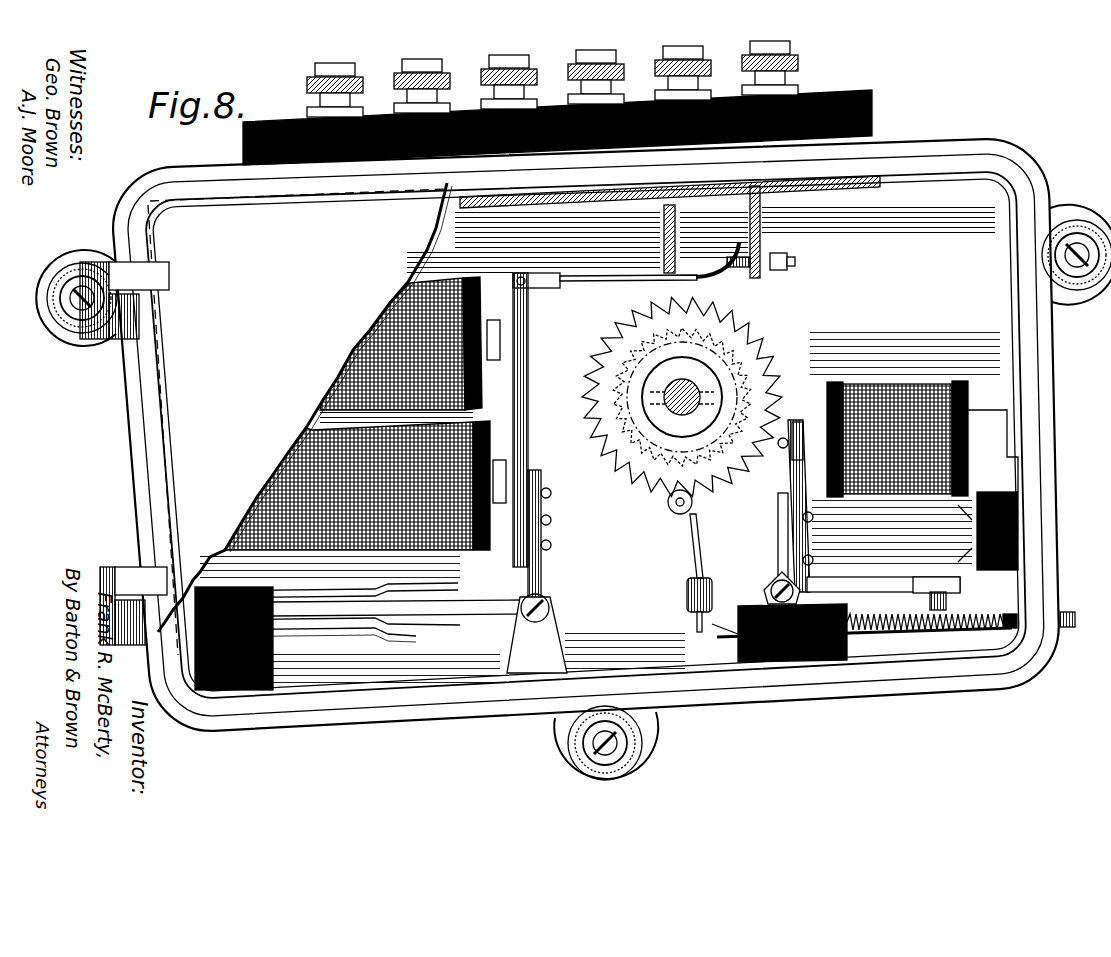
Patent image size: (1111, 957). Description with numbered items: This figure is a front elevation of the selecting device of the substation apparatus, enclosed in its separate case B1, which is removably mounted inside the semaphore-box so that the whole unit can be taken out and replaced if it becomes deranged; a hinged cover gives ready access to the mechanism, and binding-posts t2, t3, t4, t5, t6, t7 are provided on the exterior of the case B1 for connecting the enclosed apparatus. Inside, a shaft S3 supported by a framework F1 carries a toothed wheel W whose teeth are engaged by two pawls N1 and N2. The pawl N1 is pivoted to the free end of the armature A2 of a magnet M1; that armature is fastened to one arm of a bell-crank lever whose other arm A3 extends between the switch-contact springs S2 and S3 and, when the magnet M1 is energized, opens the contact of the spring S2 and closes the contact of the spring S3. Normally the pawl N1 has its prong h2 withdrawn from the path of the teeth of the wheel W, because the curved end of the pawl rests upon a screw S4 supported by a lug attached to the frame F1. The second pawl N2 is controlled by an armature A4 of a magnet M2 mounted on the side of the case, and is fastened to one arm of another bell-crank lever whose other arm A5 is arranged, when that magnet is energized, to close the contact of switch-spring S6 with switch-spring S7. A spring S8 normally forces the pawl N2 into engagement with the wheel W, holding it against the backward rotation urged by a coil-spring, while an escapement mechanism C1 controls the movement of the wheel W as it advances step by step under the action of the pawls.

The binding-post t2 is at (797, 50).
The binding-post t3 is at (706, 51).
The binding-post t4 is at (620, 55).
The binding-post t5 is at (531, 60).
The binding-post t6 is at (443, 63).
The binding-post t7 is at (356, 67).
The framework F1 is at (863, 186).
The screw S4 is at (796, 262).
The pawl N1 is at (605, 267).
The prong h2 is at (683, 290).
The toothed wheel W is at (625, 318).
The shaft S3 is at (700, 378).
The pawl N2 is at (781, 430).
The magnet M2 is at (895, 386).
The armature A2 is at (530, 353).
The magnet M1 is at (480, 428).
The case B1 is at (266, 419).
The escapement mechanism C1 is at (666, 510).
The armature A4 is at (785, 490).
The bell-crank lever arm A5 is at (778, 556).
The bell-crank lever arm A3 is at (553, 590).
The switch-contact spring S2 is at (445, 593).
The switch-spring S6 is at (960, 614).
The switch-spring S7 is at (967, 637).
The spring S8 is at (935, 635).